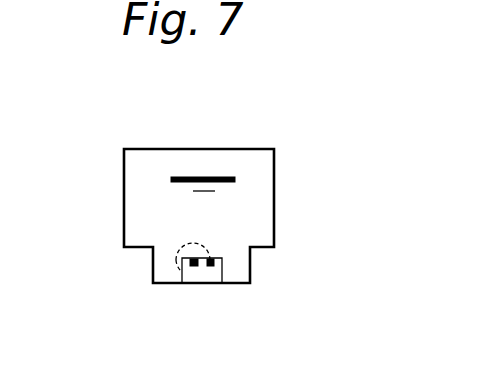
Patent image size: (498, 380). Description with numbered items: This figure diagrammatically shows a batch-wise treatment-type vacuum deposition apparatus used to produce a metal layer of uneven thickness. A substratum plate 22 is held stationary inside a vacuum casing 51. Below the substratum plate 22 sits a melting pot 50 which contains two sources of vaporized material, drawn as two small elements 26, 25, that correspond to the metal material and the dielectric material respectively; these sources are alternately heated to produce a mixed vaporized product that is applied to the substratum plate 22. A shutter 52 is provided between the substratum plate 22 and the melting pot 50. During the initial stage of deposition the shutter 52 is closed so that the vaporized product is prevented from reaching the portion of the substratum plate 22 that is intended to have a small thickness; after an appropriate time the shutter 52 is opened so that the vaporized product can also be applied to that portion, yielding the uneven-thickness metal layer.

The substratum plate 22 is at (208, 177).
The vacuum casing 51 is at (275, 183).
The shutter 52 is at (201, 192).
The melting pot 50 is at (222, 268).
The terminal 26 is at (193, 268).
The terminal 25 is at (211, 268).